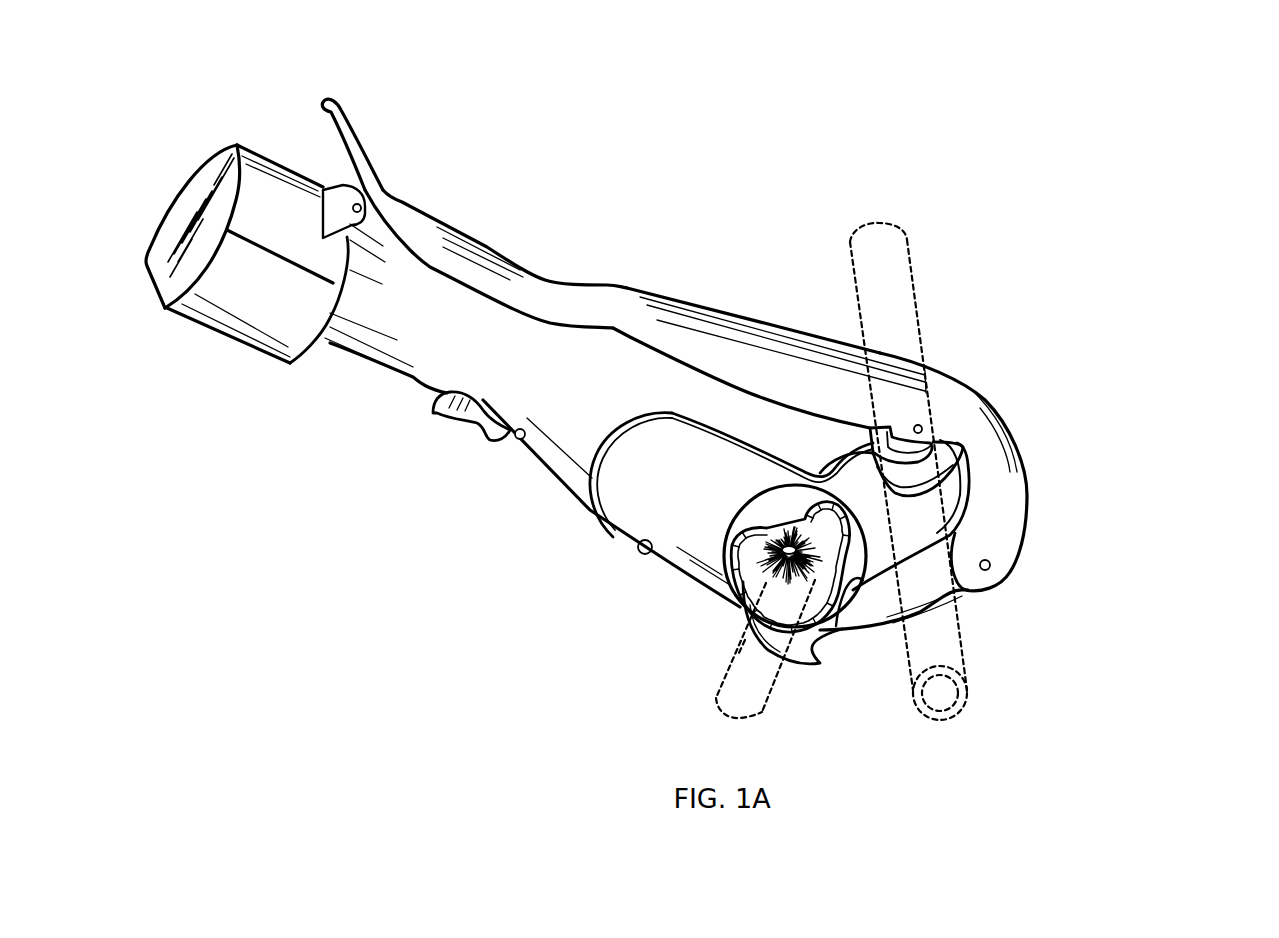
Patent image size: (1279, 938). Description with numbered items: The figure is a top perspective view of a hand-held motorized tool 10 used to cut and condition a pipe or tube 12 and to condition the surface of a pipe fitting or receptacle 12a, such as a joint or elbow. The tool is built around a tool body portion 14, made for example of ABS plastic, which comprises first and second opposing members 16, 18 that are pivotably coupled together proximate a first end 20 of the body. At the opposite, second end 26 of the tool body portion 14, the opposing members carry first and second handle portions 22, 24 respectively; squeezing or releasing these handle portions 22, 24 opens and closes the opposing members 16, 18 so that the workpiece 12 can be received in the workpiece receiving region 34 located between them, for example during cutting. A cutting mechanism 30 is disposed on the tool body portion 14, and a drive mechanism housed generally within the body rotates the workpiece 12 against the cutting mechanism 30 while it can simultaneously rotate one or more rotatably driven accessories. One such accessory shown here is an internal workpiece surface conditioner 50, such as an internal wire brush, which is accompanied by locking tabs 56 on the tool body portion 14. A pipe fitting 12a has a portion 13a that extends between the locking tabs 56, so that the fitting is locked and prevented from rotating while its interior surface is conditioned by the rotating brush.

The motorized tool 10 is at (726, 208).
The workpiece 12 is at (915, 298).
The pipe fitting or receptacle 12a is at (774, 688).
The portion 13a is at (733, 653).
The tool body portion 14 is at (562, 511).
The first opposing member 16 is at (737, 327).
The second opposing member 18 is at (780, 433).
The first end 20 is at (1155, 466).
The first handle portion 22 is at (483, 247).
The second handle portion 24 is at (373, 363).
The second end 26 is at (350, 78).
The cutting mechanism 30 is at (930, 457).
The workpiece receiving region 34 is at (915, 482).
The internal workpiece surface conditioner 50 is at (725, 612).
The locking tabs 56 is at (820, 662).